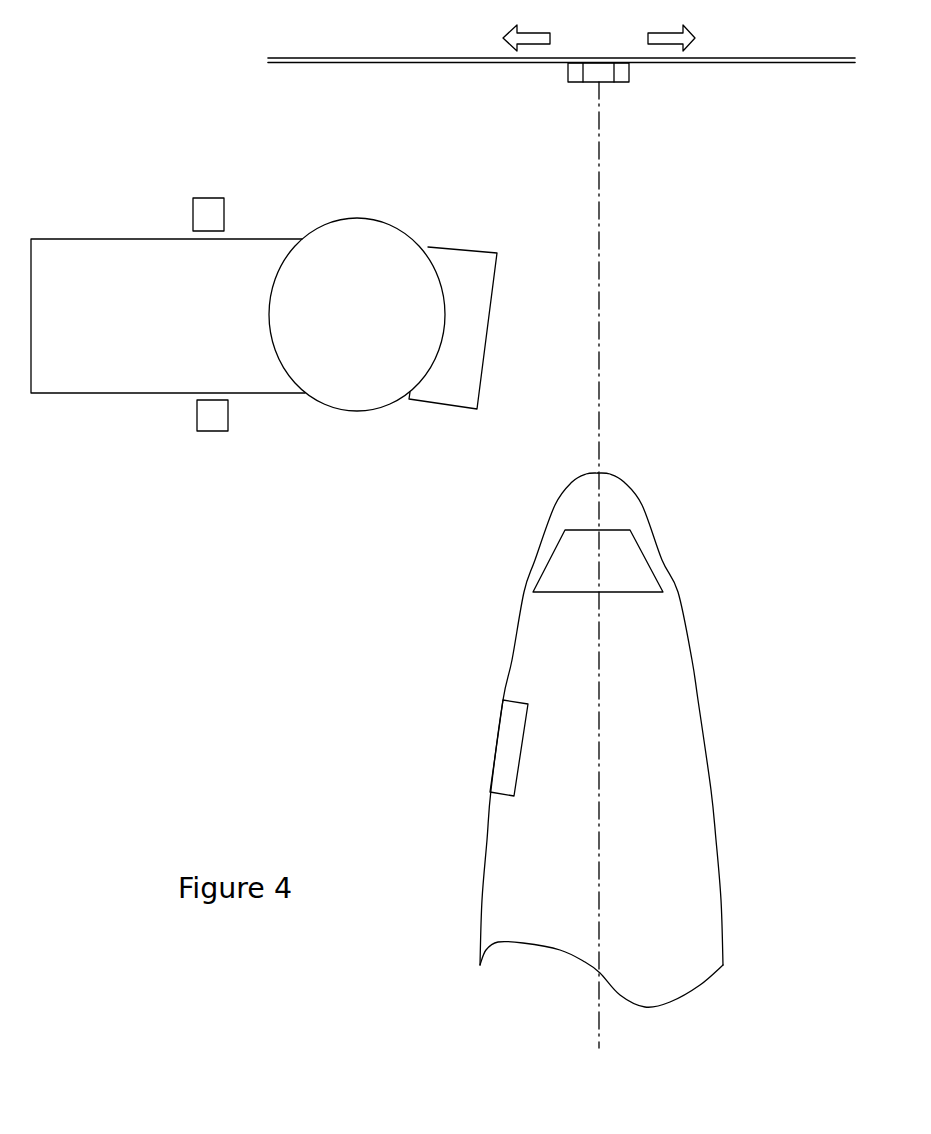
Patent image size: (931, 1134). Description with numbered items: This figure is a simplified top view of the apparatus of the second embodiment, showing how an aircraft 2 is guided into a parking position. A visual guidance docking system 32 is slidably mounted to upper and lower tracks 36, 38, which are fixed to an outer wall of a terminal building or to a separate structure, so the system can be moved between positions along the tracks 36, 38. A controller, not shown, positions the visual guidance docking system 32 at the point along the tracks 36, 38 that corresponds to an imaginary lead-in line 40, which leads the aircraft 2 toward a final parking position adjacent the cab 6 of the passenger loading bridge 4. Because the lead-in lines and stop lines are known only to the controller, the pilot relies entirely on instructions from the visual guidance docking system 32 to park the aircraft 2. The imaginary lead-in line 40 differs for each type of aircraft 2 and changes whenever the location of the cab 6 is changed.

The aircraft 2 is at (643, 780).
The passenger loading bridge 4 is at (174, 456).
The cab 6 is at (453, 384).
The visual guidance docking system 32 is at (632, 141).
The upper track 36 is at (561, 131).
The lower track 38 is at (561, 60).
The imaginary lead-in line 40 is at (666, 565).